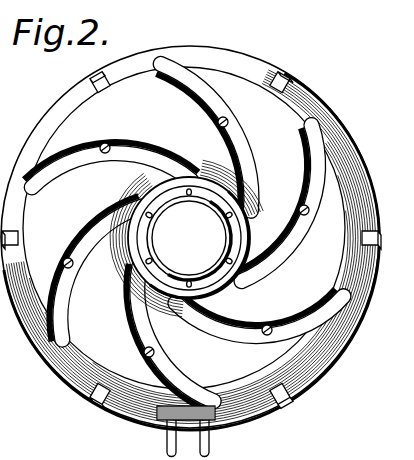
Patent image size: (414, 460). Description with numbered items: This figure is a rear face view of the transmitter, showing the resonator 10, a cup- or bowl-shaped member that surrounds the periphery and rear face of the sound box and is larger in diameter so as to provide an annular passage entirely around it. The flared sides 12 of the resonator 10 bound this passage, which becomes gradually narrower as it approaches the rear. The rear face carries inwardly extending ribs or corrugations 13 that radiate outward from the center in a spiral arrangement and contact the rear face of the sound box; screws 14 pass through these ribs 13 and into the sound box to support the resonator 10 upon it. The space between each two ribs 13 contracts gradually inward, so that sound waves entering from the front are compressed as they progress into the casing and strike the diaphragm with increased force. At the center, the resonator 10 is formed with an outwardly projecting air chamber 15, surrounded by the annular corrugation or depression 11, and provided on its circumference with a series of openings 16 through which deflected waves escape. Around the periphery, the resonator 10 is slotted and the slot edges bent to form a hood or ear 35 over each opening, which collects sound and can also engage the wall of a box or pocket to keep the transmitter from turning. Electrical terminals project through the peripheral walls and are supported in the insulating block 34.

The resonator 10 is at (184, 228).
The annular corrugation 11 is at (243, 240).
The flared sides 12 is at (325, 357).
The ribs 13 is at (178, 378).
The screws 14 is at (145, 352).
The air chamber 15 is at (189, 238).
The openings 16 is at (188, 197).
The insulating block 34 is at (222, 420).
The hood or ear 35 is at (91, 404).